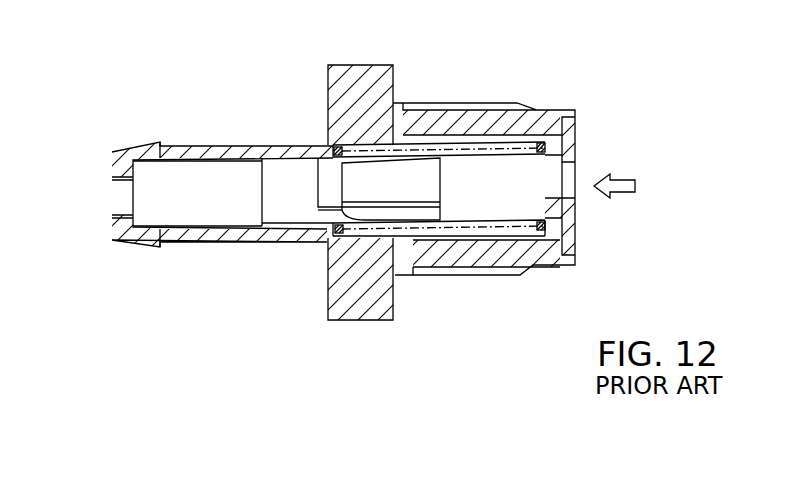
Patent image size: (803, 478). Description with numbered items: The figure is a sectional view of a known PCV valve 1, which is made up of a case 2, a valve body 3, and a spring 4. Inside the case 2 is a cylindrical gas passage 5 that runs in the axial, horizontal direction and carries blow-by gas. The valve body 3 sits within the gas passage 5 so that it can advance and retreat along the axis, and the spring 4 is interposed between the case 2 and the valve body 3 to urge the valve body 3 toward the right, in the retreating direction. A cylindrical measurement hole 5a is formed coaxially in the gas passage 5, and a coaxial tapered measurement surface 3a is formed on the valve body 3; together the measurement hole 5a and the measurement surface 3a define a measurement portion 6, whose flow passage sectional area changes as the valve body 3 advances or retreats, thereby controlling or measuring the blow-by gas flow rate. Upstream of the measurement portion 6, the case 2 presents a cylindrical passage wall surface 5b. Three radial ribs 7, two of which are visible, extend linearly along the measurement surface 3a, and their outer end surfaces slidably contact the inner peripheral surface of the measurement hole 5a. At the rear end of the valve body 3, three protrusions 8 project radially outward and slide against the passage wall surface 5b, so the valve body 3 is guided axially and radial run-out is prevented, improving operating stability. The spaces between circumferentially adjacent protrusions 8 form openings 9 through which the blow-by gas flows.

The PCV valve 1 is at (469, 52).
The case 2 is at (242, 142).
The valve body 3 is at (448, 152).
The measurement surface 3a is at (367, 147).
The spring 4 is at (546, 225).
The gas passage 5 is at (225, 209).
The measurement hole 5a is at (296, 222).
The passage wall surface 5b is at (507, 138).
The measurement portion 6 is at (331, 222).
The ribs 7 is at (327, 175).
The protrusions 8 is at (548, 148).
The openings 9 is at (547, 182).